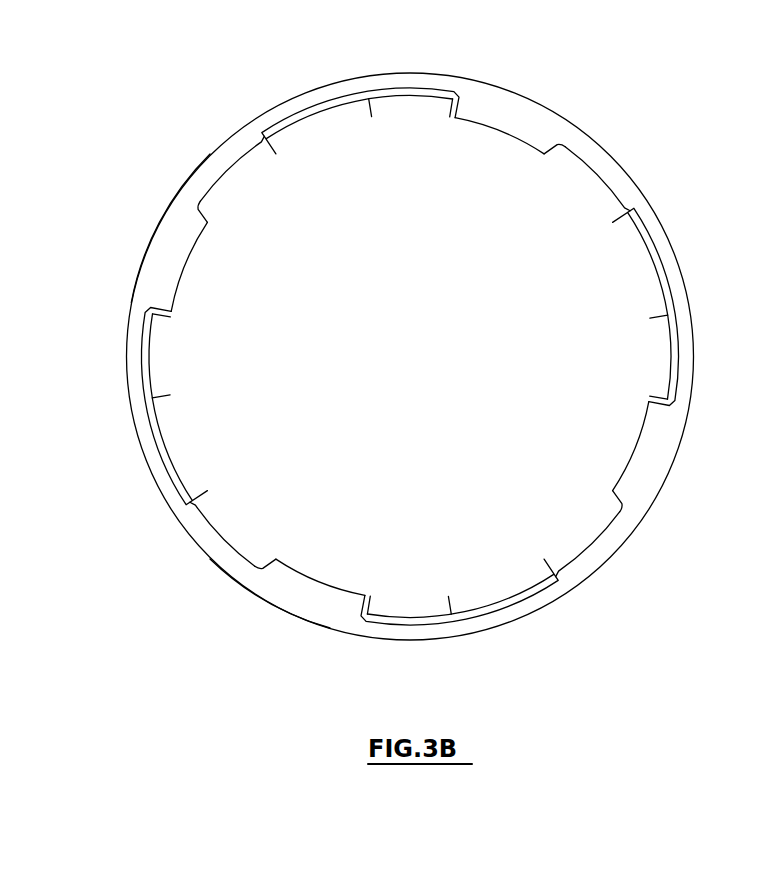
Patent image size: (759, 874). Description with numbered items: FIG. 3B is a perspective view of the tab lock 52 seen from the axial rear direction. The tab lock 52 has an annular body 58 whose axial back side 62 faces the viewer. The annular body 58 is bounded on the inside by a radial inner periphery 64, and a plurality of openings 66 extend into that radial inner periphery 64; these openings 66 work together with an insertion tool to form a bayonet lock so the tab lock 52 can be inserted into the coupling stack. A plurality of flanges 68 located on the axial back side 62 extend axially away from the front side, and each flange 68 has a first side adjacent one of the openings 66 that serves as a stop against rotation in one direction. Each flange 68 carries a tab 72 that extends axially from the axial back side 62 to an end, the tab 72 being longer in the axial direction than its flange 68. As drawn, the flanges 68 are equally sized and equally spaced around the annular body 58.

The tab lock 52 is at (627, 150).
The annular body 58 is at (177, 232).
The axial back side 62 is at (298, 607).
The radial inner periphery 64 is at (283, 560).
The openings 66 is at (238, 182).
The flanges 68 is at (293, 128).
The tab 72 is at (399, 103).